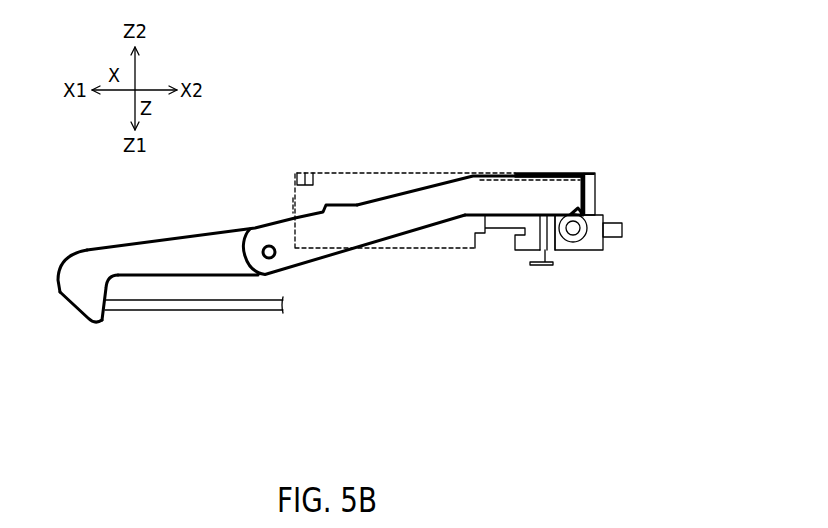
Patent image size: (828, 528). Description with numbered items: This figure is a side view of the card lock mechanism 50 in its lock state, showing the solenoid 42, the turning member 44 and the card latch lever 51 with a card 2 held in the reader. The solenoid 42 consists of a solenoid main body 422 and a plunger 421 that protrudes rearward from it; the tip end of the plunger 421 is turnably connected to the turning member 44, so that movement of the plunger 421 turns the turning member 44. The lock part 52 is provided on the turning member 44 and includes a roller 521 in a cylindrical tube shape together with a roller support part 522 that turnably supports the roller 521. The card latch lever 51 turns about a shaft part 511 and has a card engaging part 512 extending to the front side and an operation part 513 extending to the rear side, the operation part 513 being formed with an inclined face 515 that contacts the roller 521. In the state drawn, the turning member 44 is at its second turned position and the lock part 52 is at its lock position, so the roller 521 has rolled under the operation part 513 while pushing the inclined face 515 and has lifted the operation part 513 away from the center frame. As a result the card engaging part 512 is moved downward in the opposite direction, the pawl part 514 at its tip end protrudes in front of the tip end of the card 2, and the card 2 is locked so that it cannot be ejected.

The card 2 is at (190, 310).
The solenoid 42 is at (436, 264).
The plunger 421 is at (485, 250).
The solenoid main body 422 is at (541, 321).
The turning member 44 is at (596, 175).
The card lock mechanism 50 is at (555, 142).
The card latch lever 51 is at (369, 241).
The shaft part 511 is at (243, 243).
The card engaging part 512 is at (128, 247).
The operation part 513 is at (493, 172).
The pawl part 514 is at (72, 307).
The inclined face 515 is at (587, 216).
The lock part 52 is at (607, 301).
The roller 521 is at (563, 252).
The roller support part 522 is at (600, 252).